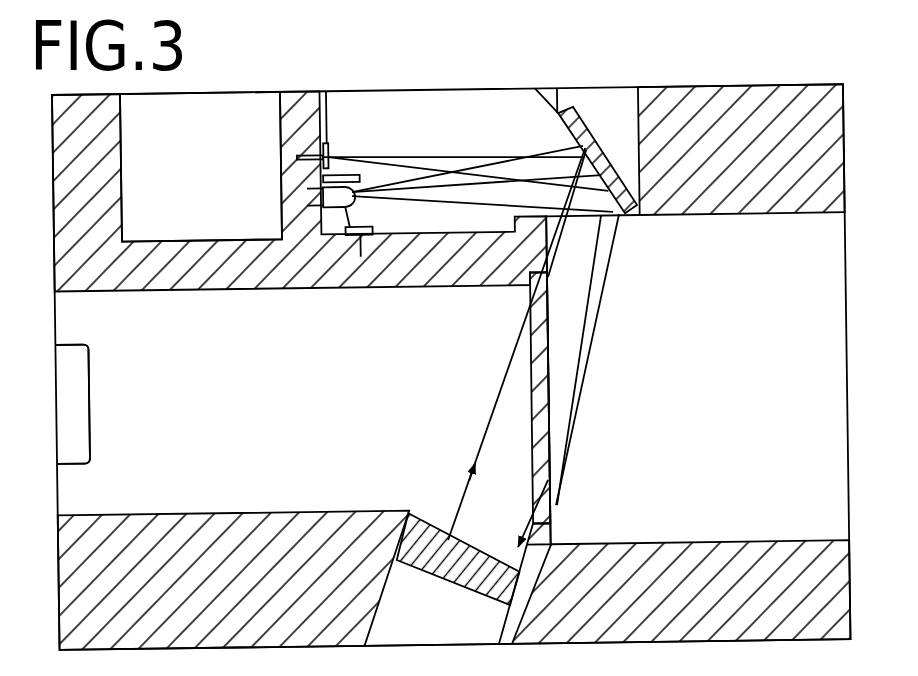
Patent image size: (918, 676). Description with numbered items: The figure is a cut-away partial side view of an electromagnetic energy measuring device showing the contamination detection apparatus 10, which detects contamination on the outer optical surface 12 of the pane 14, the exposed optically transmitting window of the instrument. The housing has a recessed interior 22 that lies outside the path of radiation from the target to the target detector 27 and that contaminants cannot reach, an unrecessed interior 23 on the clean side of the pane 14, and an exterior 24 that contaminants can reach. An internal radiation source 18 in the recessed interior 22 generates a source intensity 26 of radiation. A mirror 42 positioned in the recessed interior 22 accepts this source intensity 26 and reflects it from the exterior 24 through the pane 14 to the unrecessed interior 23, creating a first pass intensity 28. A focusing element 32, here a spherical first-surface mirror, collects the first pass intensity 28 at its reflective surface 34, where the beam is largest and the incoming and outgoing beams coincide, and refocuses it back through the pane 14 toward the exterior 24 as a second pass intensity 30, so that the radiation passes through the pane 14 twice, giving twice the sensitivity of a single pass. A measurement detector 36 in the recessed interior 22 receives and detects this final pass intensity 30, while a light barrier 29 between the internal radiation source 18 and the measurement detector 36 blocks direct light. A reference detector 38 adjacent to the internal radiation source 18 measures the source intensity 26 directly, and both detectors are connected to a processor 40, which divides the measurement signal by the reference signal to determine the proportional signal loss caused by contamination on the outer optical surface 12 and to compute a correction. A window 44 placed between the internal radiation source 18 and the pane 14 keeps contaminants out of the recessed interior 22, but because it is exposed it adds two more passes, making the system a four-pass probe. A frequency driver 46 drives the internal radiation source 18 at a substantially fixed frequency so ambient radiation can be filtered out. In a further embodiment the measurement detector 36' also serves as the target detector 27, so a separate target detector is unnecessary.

The contamination detection apparatus 10 is at (580, 84).
The outer optical surface 12 is at (546, 362).
The pane 14 is at (532, 440).
The internal radiation source 18 is at (326, 211).
The recessed interior 22 is at (391, 128).
The unrecessed interior 23 is at (121, 506).
The exterior 24 is at (804, 268).
The source intensity of radiation 26 is at (441, 191).
The target detector 27 is at (68, 383).
The first pass intensity of radiation 28 is at (513, 551).
The light barrier 29 is at (347, 180).
The second pass intensity of radiation 30 is at (422, 173).
The focusing element 32 is at (466, 598).
The reflective surface 34 is at (422, 530).
The measurement detector 36 is at (323, 112).
The measurement detector 36' is at (51, 405).
The reference detector 38 is at (359, 262).
The processor 40 is at (201, 155).
The mirror 42 is at (562, 134).
The window 44 is at (585, 229).
The frequency driver 46 is at (467, 169).